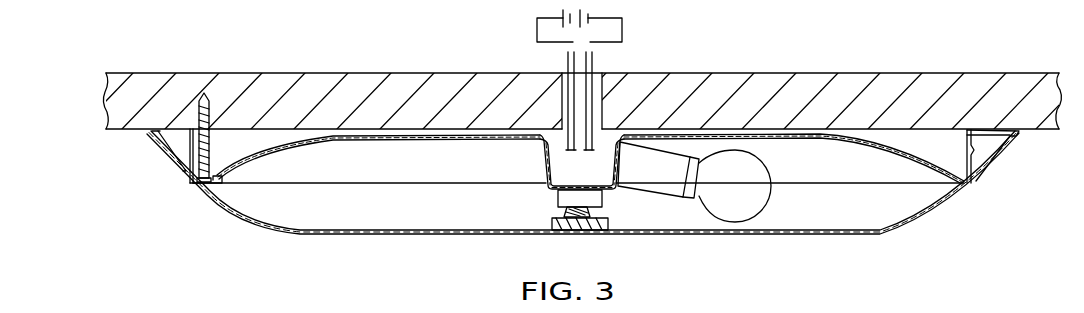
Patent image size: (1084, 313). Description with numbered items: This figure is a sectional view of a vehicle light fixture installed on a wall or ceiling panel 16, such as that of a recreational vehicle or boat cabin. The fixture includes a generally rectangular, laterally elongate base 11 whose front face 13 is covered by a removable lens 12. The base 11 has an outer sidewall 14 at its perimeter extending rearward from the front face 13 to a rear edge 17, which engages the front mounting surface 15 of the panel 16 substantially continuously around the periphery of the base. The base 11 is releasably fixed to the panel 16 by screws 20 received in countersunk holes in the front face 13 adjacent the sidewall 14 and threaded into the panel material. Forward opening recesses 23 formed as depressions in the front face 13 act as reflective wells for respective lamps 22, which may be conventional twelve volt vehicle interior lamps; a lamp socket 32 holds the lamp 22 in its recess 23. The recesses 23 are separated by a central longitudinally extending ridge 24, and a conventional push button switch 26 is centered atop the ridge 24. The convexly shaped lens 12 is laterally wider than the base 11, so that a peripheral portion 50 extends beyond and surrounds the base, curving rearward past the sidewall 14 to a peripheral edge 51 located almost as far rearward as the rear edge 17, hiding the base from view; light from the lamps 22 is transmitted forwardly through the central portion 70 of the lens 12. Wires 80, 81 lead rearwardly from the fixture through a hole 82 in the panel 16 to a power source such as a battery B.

The base 11 is at (283, 187).
The lens 12 is at (322, 236).
The front face 13 is at (390, 186).
The outer sidewall 14 is at (188, 160).
The mounting surface 15 is at (128, 134).
The panel 16 is at (317, 86).
The rear edge 17 is at (300, 129).
The screws 20 is at (208, 96).
The lamps 22 is at (756, 208).
The recesses 23 is at (440, 137).
The ridge 24 is at (543, 163).
The push button switch 26 is at (603, 198).
The lamp socket 32 is at (662, 162).
The peripheral portion 50 is at (160, 155).
The peripheral edge 51 is at (142, 73).
The central portion 70 is at (787, 236).
The wire 80 is at (570, 82).
The wire 81 is at (588, 75).
The hole 82 is at (563, 105).
The battery B is at (563, 15).